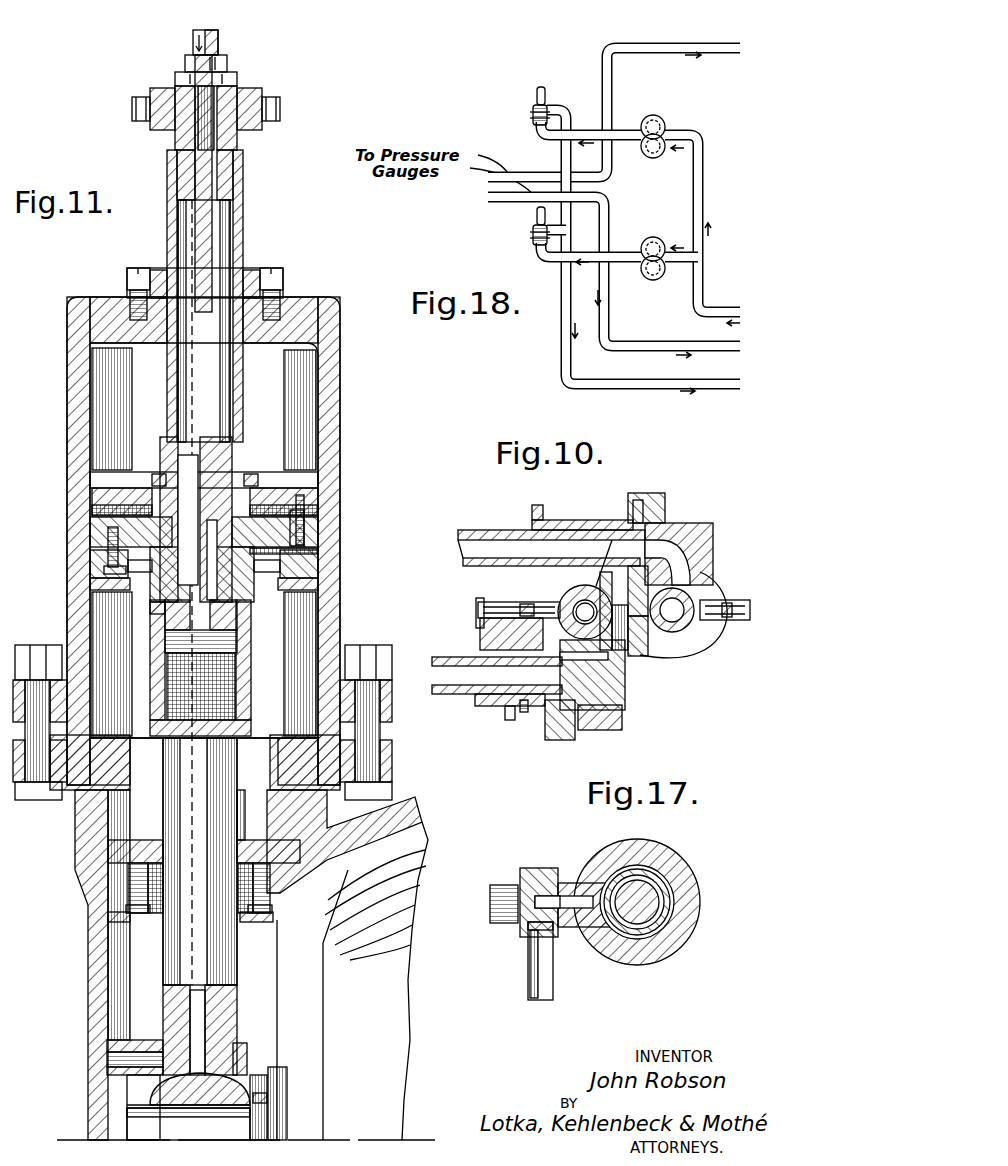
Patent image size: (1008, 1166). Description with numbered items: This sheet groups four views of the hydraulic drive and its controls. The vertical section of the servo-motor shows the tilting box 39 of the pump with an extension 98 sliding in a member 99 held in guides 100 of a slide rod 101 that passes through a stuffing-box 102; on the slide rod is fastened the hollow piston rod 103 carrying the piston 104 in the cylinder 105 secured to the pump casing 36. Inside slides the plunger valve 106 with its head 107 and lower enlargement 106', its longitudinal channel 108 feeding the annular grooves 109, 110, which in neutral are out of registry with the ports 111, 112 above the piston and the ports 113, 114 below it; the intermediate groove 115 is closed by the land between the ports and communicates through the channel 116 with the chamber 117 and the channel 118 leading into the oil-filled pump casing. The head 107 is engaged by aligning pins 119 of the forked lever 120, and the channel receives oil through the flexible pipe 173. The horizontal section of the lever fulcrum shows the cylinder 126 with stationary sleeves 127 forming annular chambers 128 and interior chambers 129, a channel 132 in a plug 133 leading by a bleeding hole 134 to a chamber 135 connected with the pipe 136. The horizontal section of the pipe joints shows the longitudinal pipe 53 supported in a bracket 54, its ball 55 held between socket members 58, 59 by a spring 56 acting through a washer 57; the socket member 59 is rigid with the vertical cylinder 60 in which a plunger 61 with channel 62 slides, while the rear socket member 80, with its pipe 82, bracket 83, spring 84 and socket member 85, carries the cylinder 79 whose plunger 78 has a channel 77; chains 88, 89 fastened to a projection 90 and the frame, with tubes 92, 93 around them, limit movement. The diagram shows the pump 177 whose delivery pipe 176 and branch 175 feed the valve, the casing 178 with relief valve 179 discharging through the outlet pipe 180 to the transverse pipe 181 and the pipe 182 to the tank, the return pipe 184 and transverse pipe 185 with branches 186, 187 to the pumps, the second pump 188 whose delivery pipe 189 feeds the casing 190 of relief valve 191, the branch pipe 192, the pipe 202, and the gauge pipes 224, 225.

In FIG. 11, the hose or flexible pipe 173 is at (220, 40).
In FIG. 11, the forked lever 120 is at (234, 76).
In FIG. 11, the aligning pins 119 is at (132, 106).
In FIG. 11, the head 107 is at (175, 143).
In FIG. 11, the longitudinal channel 108 is at (243, 161).
In FIG. 11, the plunger valve 106 is at (230, 520).
In FIG. 11, the cylinder 105 is at (340, 436).
In FIG. 11, the annular groove 109 is at (236, 463).
In FIG. 11, the port 111 is at (170, 484).
In FIG. 11, the port 112 is at (248, 484).
In FIG. 11, the intermediate annular groove 115 is at (304, 524).
In FIG. 11, the piston 104 is at (290, 530).
In FIG. 11, the port 114 is at (300, 570).
In FIG. 11, the port 113 is at (170, 578).
In FIG. 11, the annular groove 110 is at (175, 598).
In FIG. 11, the channel 116 is at (160, 624).
In FIG. 11, the enlargement 106' is at (227, 615).
In FIG. 11, the chamber 117 is at (251, 646).
In FIG. 11, the piston rod 103 is at (251, 680).
In FIG. 11, the pump casing 36 is at (412, 810).
In FIG. 11, the stuffing-box 102 is at (276, 904).
In FIG. 11, the slide rod 101 is at (222, 966).
In FIG. 11, the longitudinal channel 118 is at (205, 1010).
In FIG. 11, the guides 100 is at (245, 1080).
In FIG. 11, the member 99 is at (200, 1092).
In FIG. 11, the extension 98 is at (246, 1103).
In FIG. 11, the tilting box 39 is at (352, 981).
In FIG. 18, the horizontal pipe portion 175 is at (612, 90).
In FIG. 18, the delivery pipe 176 is at (632, 145).
In FIG. 18, the pump 177 is at (660, 118).
In FIG. 18, the casing 178 is at (546, 108).
In FIG. 18, the relief valve 179 is at (533, 110).
In FIG. 18, the outlet pipe 180 is at (570, 110).
In FIG. 18, the transverse pipe 181 is at (562, 158).
In FIG. 18, the pipe 182 is at (563, 320).
In FIG. 18, the pipe 184 is at (722, 313).
In FIG. 18, the transverse pipe 185 is at (705, 208).
In FIG. 18, the branch 186 is at (695, 129).
In FIG. 18, the branch 187 is at (682, 262).
In FIG. 18, the pump 188 is at (656, 240).
In FIG. 18, the delivery pipe 189 is at (618, 260).
In FIG. 18, the casing 190 is at (533, 240).
In FIG. 18, the relief valve 191 is at (534, 226).
In FIG. 18, the branch pipe 192 is at (548, 231).
In FIG. 18, the pipe 202 is at (612, 316).
In FIG. 18, the pipe 224 is at (488, 174).
In FIG. 18, the pipe 225 is at (488, 197).
In FIG. 10, the pipe 82 is at (498, 528).
In FIG. 10, the bracket 83 is at (552, 518).
In FIG. 10, the spring 84 is at (620, 518).
In FIG. 10, the socket member 85 is at (652, 492).
In FIG. 10, the socket member 80 is at (714, 540).
In FIG. 10, the plunger 61 is at (584, 585).
In FIG. 10, the longitudinal channel 62 is at (592, 588).
In FIG. 10, the vertical cylinder 60 is at (556, 595).
In FIG. 10, the longitudinal channel 77 is at (678, 632).
In FIG. 10, the plunger 78 is at (700, 640).
In FIG. 10, the cylinder 79 is at (662, 650).
In FIG. 10, the metal tube 93 is at (735, 600).
In FIG. 10, the chain 89 is at (748, 620).
In FIG. 10, the metal tube 92 is at (500, 602).
In FIG. 10, the projection 90 is at (478, 612).
In FIG. 10, the chain 88 is at (511, 634).
In FIG. 10, the ball 55 is at (590, 668).
In FIG. 10, the longitudinal pipe 53 is at (452, 658).
In FIG. 10, the bracket 54 is at (488, 705).
In FIG. 10, the spring 56 is at (524, 712).
In FIG. 10, the washer 57 is at (546, 728).
In FIG. 10, the socket member 58 is at (572, 726).
In FIG. 10, the socket member 59 is at (614, 722).
In FIG. 17, the cylinder 126 is at (662, 870).
In FIG. 17, the sleeves 127 is at (673, 896).
In FIG. 17, the annular chambers 128 is at (670, 888).
In FIG. 17, the interior annular chambers 129 is at (659, 912).
In FIG. 17, the channel 132 is at (566, 895).
In FIG. 17, the plug 133 is at (542, 856).
In FIG. 17, the bleeding hole 134 is at (556, 868).
In FIG. 17, the chamber 135 is at (514, 923).
In FIG. 17, the pipe 136 is at (548, 972).